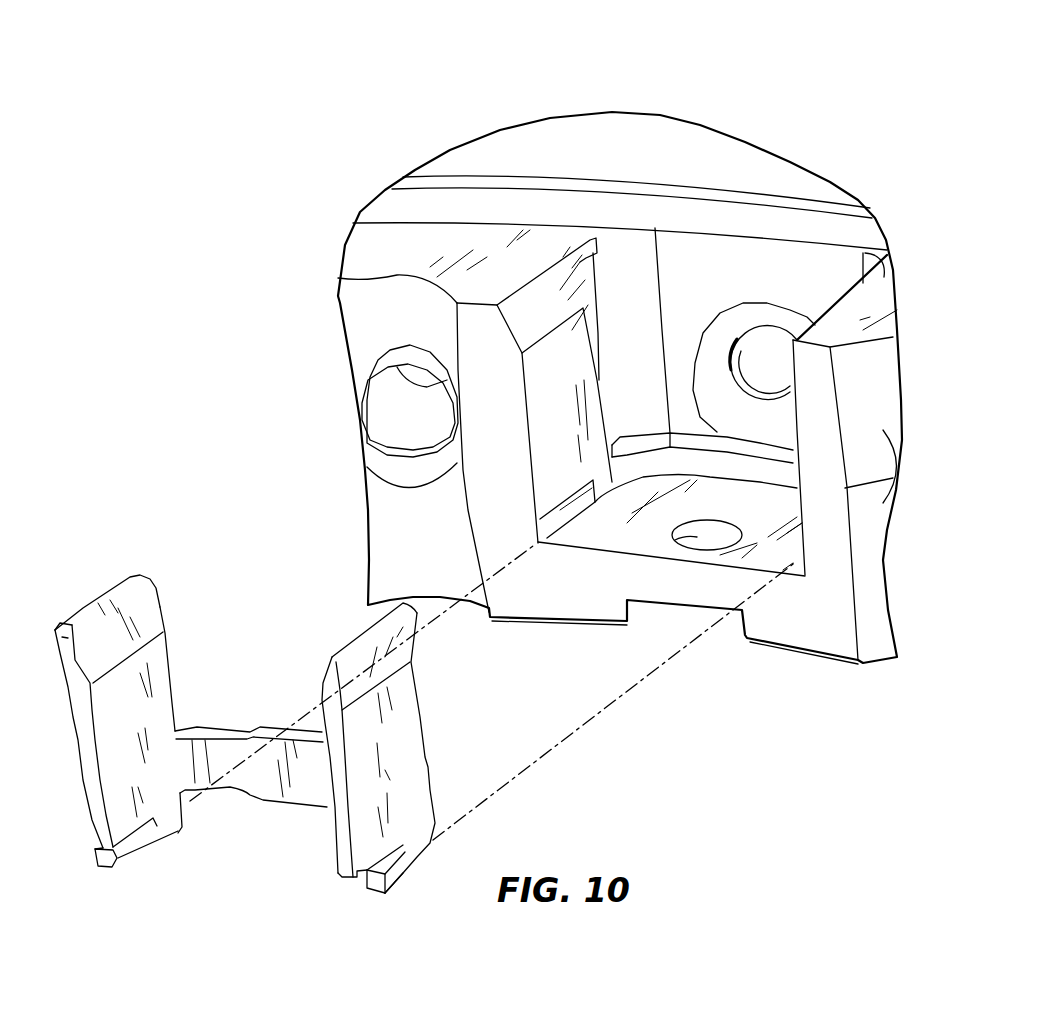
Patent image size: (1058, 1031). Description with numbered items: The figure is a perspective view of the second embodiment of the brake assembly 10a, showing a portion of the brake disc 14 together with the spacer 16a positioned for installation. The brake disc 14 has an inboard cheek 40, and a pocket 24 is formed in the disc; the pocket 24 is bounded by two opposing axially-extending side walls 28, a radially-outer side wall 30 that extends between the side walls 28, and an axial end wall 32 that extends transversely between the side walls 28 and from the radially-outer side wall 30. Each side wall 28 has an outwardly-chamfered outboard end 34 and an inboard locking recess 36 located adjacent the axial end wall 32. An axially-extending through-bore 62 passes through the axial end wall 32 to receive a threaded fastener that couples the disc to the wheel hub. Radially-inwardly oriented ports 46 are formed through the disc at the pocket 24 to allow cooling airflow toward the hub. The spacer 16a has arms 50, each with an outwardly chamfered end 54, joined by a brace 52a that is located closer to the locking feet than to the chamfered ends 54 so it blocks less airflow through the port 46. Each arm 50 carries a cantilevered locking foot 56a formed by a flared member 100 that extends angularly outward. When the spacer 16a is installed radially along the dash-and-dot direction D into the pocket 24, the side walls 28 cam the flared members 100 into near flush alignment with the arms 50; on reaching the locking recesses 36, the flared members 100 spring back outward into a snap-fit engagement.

The brake assembly 10a is at (828, 78).
The brake disc 14 is at (770, 186).
The inboard cheek 40 is at (616, 142).
The radially-outer side wall 30 is at (775, 267).
The pocket 24 is at (850, 277).
The port 46 is at (773, 320).
The axially-extending side wall 28 is at (543, 430).
The outwardly-chamfered outboard end 34 is at (860, 377).
The inboard locking recess 36 is at (561, 522).
The axial end wall 32 is at (627, 543).
The axially-extending through-bore 62 is at (695, 538).
The installation direction D is at (302, 716).
The spacer 16a is at (122, 905).
The arm 50 is at (402, 723).
The outwardly chamfered end 54 is at (132, 598).
The brace 52a is at (270, 780).
The flared member 100 is at (110, 866).
The locking foot 56a is at (88, 860).